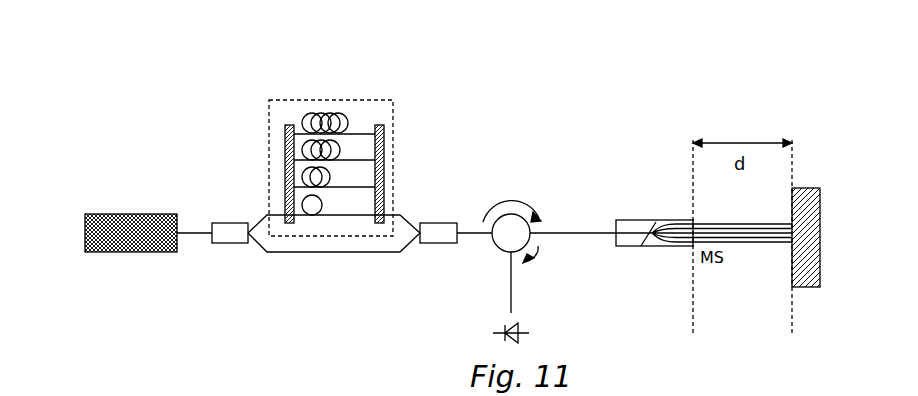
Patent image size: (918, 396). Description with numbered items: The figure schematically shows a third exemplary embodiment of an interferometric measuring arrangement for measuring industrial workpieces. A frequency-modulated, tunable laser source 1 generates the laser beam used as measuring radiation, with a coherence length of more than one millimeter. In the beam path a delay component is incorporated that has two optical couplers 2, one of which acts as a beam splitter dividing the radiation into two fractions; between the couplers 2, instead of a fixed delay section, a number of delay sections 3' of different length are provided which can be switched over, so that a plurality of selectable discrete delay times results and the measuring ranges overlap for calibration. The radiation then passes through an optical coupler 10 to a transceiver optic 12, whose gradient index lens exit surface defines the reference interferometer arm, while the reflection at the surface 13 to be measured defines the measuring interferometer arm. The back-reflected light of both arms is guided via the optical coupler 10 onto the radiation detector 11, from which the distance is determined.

The frequency-modulated laser source 1 is at (122, 225).
The optical coupler 2 is at (235, 238).
The switchable delay sections 3' is at (300, 154).
The optical coupler 10 is at (513, 220).
The radiation detector 11 is at (513, 328).
The transceiver optic 12 is at (633, 222).
The surface to be measured 13 is at (810, 278).